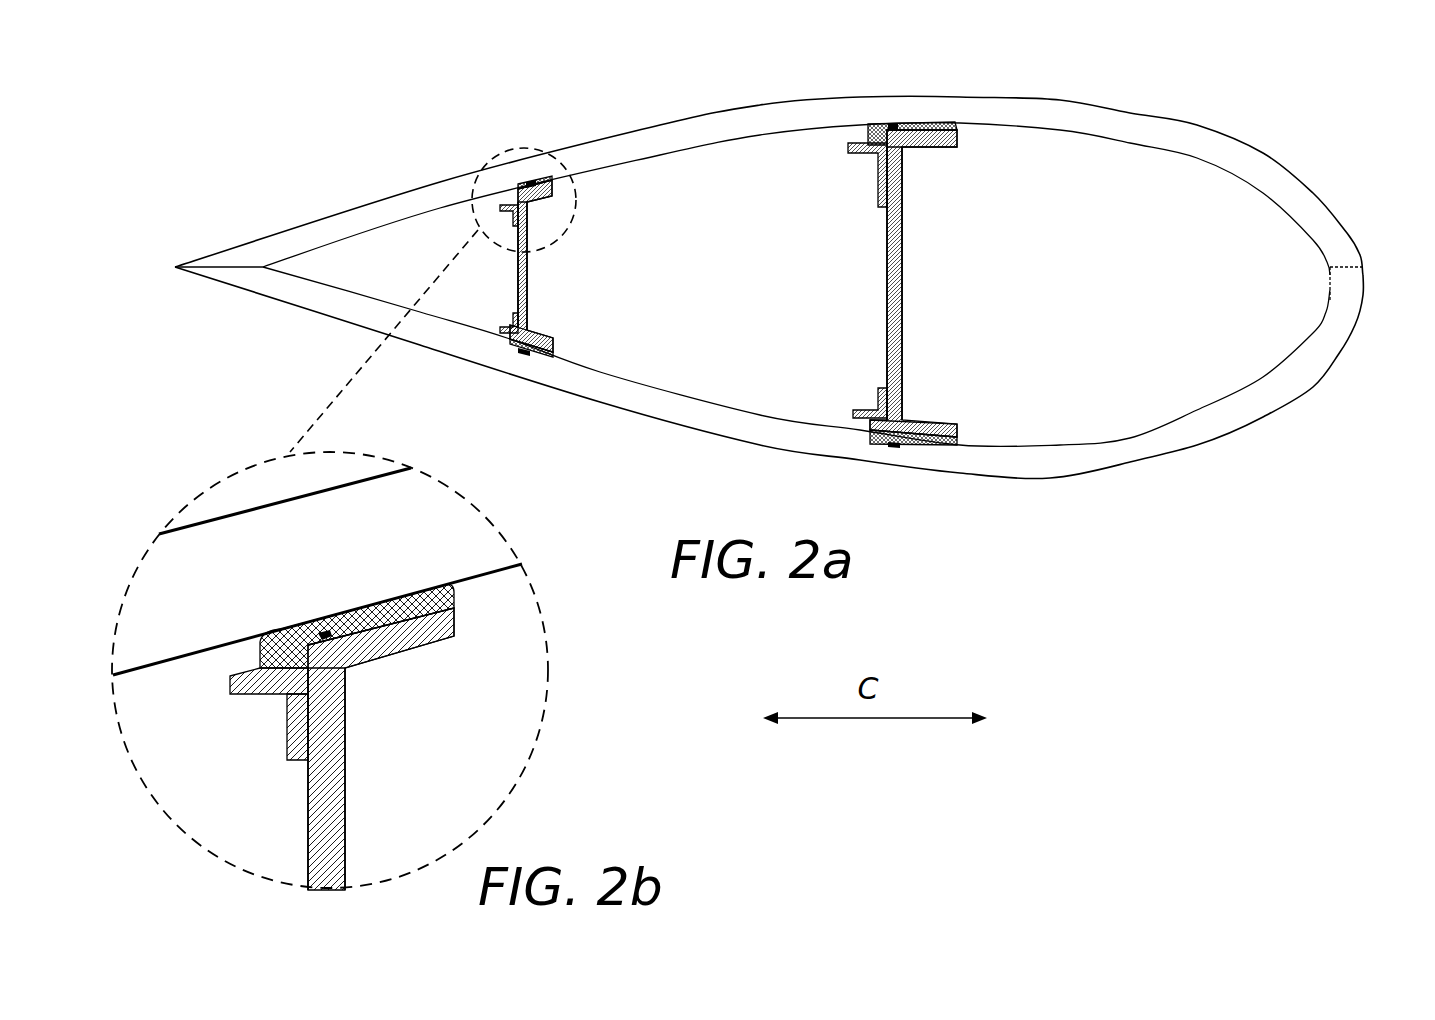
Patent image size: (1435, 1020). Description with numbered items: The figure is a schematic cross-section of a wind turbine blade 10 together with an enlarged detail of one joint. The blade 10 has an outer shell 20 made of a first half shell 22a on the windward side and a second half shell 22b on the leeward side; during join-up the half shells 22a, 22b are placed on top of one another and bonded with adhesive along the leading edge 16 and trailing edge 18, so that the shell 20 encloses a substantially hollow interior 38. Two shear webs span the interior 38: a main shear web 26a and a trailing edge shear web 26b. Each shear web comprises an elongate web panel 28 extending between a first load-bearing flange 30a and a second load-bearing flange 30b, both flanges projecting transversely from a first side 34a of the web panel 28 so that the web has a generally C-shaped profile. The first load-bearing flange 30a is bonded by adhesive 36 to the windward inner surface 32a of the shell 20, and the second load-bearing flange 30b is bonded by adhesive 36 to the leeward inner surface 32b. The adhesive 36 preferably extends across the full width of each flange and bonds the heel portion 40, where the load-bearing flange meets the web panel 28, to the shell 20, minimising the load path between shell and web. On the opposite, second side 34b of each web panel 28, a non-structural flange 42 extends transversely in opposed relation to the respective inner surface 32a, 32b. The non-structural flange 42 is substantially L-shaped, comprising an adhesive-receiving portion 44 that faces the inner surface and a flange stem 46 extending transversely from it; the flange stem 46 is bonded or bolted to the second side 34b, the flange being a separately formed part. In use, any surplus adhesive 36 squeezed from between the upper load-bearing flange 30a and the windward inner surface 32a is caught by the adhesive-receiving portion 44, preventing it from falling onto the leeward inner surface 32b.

In FIG. 2a, the wind turbine blade 10 is at (771, 256).
In FIG. 2a, the leading edge 16 is at (1370, 248).
In FIG. 2a, the trailing edge 18 is at (180, 253).
In FIG. 2a, the outer shell 20 is at (771, 268).
In FIG. 2b, the outer shell 20 is at (317, 578).
In FIG. 2a, the first half shell 22a is at (762, 118).
In FIG. 2b, the first half shell 22a is at (441, 492).
In FIG. 2a, the second half shell 22b is at (678, 412).
In FIG. 2a, the main shear web 26a is at (927, 313).
In FIG. 2a, the trailing edge shear web 26b is at (592, 248).
In FIG. 2b, the trailing edge shear web 26b is at (372, 779).
In FIG. 2a, the web panel 28 is at (528, 262).
In FIG. 2b, the web panel 28 is at (320, 823).
In FIG. 2a, the first load-bearing flange 30a is at (552, 213).
In FIG. 2b, the first load-bearing flange 30a is at (411, 671).
In FIG. 2a, the second load-bearing flange 30b is at (552, 330).
In FIG. 2a, the windward inner surface 32a is at (714, 146).
In FIG. 2b, the windward inner surface 32a is at (176, 660).
In FIG. 2a, the leeward inner surface 32b is at (714, 400).
In FIG. 2a, the first side of the web panel 34a is at (529, 293).
In FIG. 2b, the first side of the web panel 34a is at (348, 850).
In FIG. 2a, the second side of the web panel 34b is at (516, 270).
In FIG. 2b, the second side of the web panel 34b is at (308, 860).
In FIG. 2a, the adhesive 36 is at (547, 178).
In FIG. 2b, the adhesive 36 is at (446, 596).
In FIG. 2a, the hollow interior 38 is at (720, 279).
In FIG. 2a, the heel portion 40 is at (530, 183).
In FIG. 2b, the heel portion 40 is at (328, 632).
In FIG. 2a, the non-structural flange 42 is at (506, 208).
In FIG. 2b, the non-structural flange 42 is at (252, 736).
In FIG. 2b, the adhesive-receiving portion 44 is at (256, 699).
In FIG. 2b, the flange stem 46 is at (300, 723).